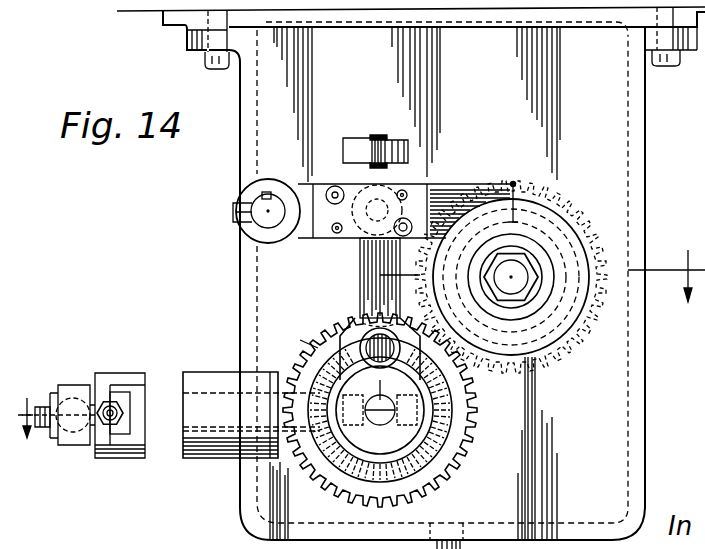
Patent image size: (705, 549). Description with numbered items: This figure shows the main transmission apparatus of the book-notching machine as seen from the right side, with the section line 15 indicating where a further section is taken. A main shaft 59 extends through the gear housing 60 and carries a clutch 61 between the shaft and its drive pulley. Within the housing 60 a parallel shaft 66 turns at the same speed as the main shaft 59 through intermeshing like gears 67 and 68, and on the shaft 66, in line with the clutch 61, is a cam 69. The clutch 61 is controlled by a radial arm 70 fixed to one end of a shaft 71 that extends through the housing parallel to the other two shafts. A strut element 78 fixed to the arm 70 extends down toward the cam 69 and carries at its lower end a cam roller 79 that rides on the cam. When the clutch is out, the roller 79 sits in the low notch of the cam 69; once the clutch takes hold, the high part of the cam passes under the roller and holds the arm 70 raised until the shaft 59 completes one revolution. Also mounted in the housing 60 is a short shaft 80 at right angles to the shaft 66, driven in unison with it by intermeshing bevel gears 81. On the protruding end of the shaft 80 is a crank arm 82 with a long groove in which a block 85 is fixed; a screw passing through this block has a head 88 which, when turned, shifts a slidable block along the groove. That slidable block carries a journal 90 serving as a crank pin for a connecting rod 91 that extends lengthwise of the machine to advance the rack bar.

The section line 15— 15 is at (361, 335).
The shaft 59 is at (512, 278).
The gear housing 60 is at (620, 139).
The clutch 61 is at (527, 205).
The shaft 66 is at (383, 418).
The gear 67 is at (478, 438).
The gear 68 is at (537, 377).
The cam 69 is at (455, 407).
The radial arm 70 is at (443, 182).
The shaft 71 is at (271, 208).
The strut element 78 is at (363, 265).
The cam roller 79 is at (352, 323).
The short shaft 80 is at (163, 395).
The bevel gears 81 is at (294, 333).
The crank arm 82 is at (138, 388).
The block 85 is at (122, 433).
The head 88 is at (114, 402).
The journal 90 is at (42, 427).
The connecting rod 91 is at (68, 387).